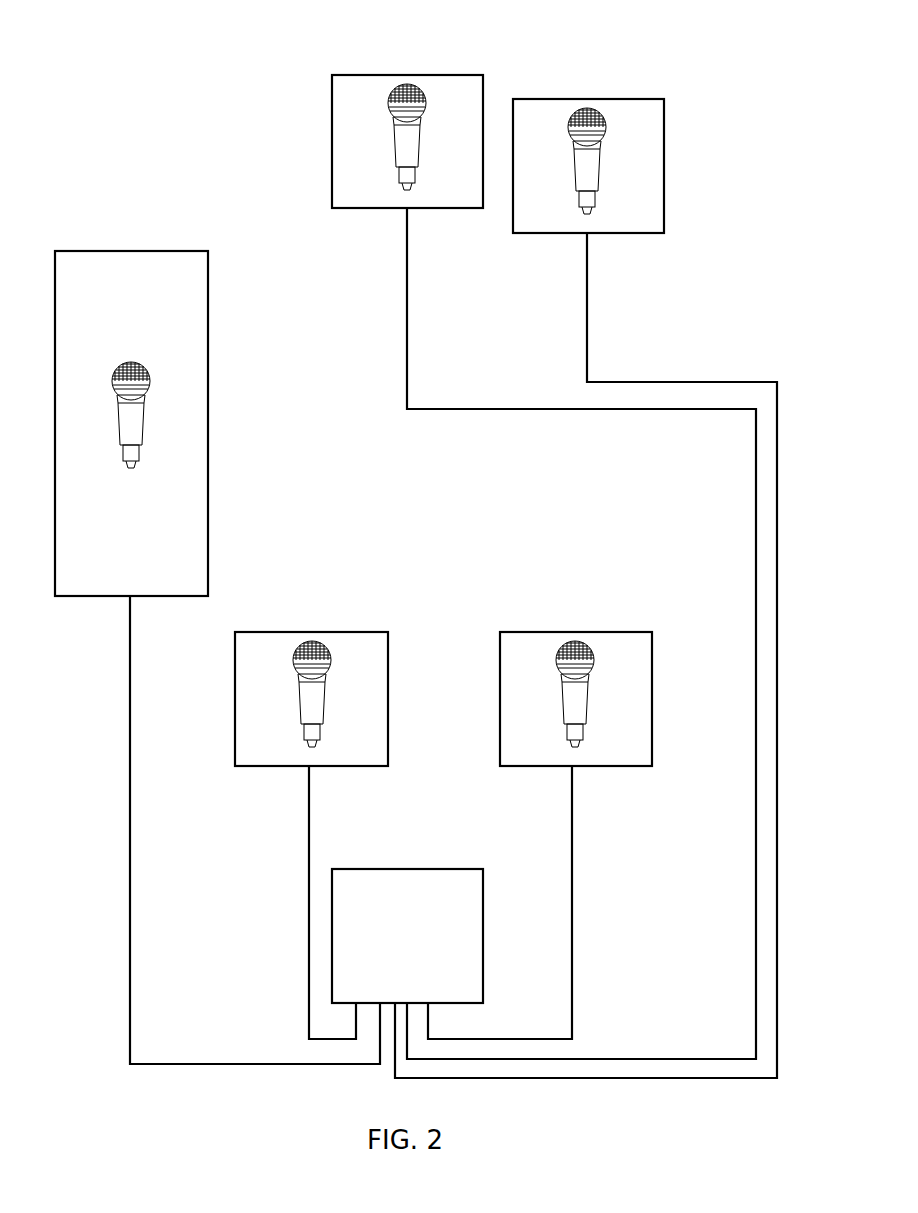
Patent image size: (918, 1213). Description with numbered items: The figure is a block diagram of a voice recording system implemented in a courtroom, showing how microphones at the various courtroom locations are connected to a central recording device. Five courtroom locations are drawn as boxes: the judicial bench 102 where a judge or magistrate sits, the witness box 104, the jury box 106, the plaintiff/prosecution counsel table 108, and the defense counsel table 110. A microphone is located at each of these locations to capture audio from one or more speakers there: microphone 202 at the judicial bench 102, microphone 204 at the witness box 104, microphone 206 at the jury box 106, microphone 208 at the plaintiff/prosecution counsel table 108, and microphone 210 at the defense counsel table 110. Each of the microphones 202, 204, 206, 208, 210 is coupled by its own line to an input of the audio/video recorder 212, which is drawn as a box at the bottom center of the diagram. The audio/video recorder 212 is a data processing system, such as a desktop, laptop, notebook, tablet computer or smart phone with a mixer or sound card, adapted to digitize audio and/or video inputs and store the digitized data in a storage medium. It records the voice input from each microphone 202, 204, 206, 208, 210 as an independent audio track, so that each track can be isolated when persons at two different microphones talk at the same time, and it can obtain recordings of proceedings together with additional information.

The judicial bench 102 is at (466, 75).
The witness box 104 is at (647, 99).
The jury box 106 is at (191, 251).
The plaintiff/prosecution counsel table 108 is at (371, 632).
The defense counsel table 110 is at (635, 632).
The audio/video recorder 212 is at (466, 869).
The microphone 202 is at (400, 143).
The microphone 204 is at (580, 167).
The microphone 206 is at (124, 421).
The microphone 208 is at (305, 700).
The microphone 210 is at (568, 700).